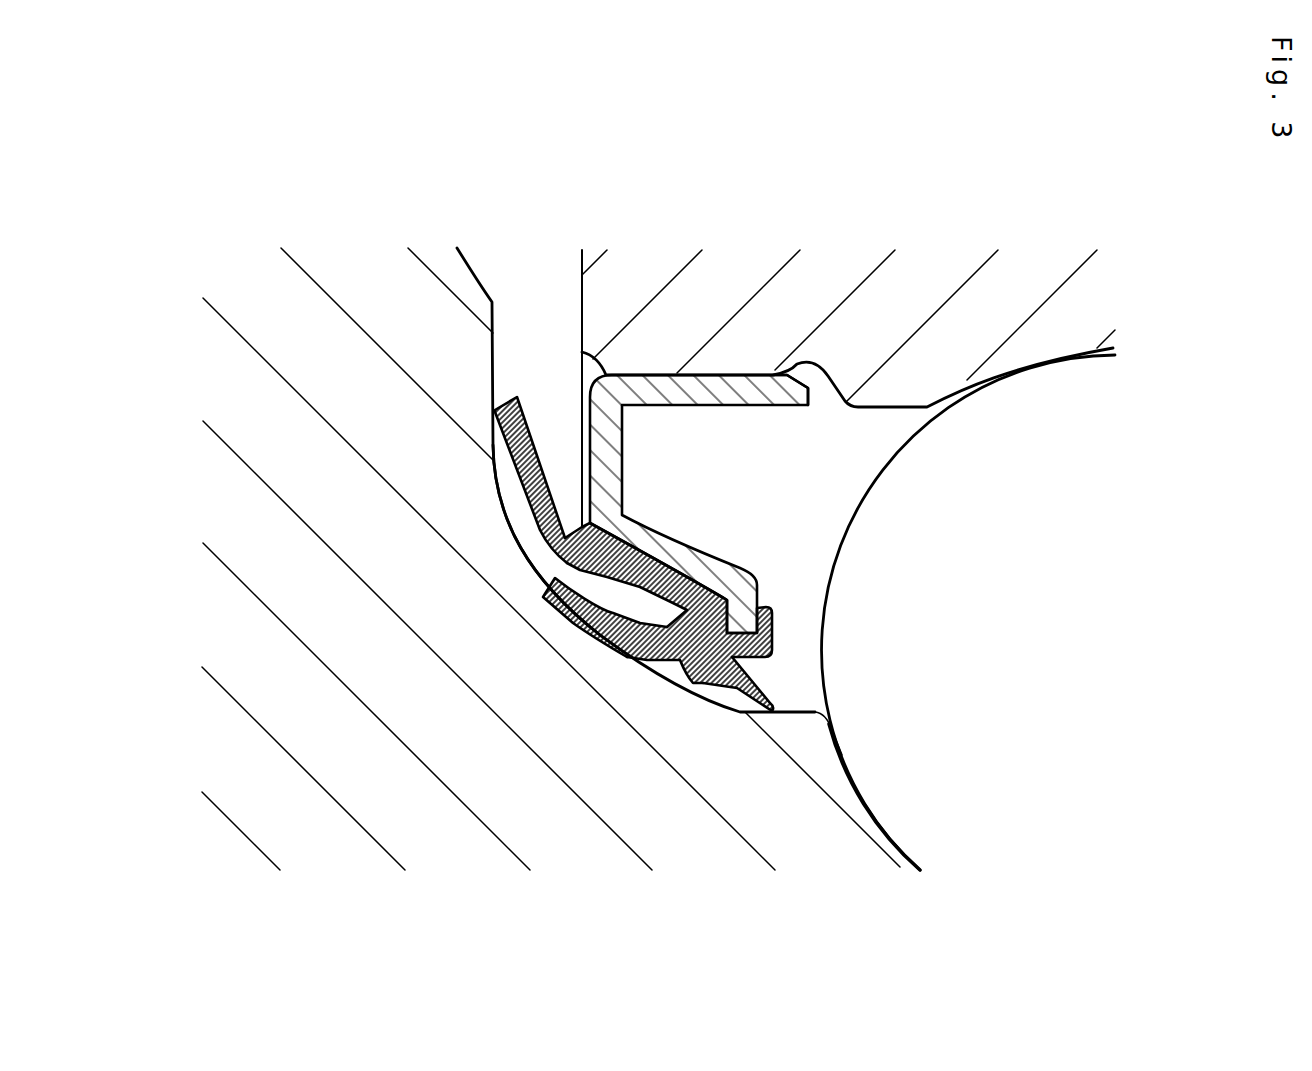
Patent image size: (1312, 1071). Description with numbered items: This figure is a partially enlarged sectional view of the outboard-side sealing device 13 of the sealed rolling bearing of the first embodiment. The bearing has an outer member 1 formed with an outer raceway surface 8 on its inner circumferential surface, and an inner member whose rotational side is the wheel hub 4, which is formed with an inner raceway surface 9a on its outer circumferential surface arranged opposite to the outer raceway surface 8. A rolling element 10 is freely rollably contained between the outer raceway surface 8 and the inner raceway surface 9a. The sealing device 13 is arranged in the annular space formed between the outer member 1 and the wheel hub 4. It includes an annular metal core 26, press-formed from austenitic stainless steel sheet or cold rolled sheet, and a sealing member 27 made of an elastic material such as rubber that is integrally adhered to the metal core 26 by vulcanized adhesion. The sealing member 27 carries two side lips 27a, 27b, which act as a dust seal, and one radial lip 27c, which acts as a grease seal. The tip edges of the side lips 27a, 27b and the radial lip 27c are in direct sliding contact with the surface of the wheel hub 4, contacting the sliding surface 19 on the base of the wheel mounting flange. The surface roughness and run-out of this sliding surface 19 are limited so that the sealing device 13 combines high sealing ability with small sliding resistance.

The outer member 1 is at (650, 272).
The wheel hub 4 is at (237, 639).
The outer raceway surface 8 is at (981, 385).
The inner raceway surface 9a is at (838, 748).
The rolling element 10 is at (998, 408).
The sealing device 13 is at (777, 377).
The sliding surface 19 is at (527, 539).
The metal core 26 is at (717, 388).
The sealing member 27 is at (687, 678).
The side lip 27a is at (495, 420).
The side lip 27b is at (572, 626).
The radial lip 27c is at (742, 695).